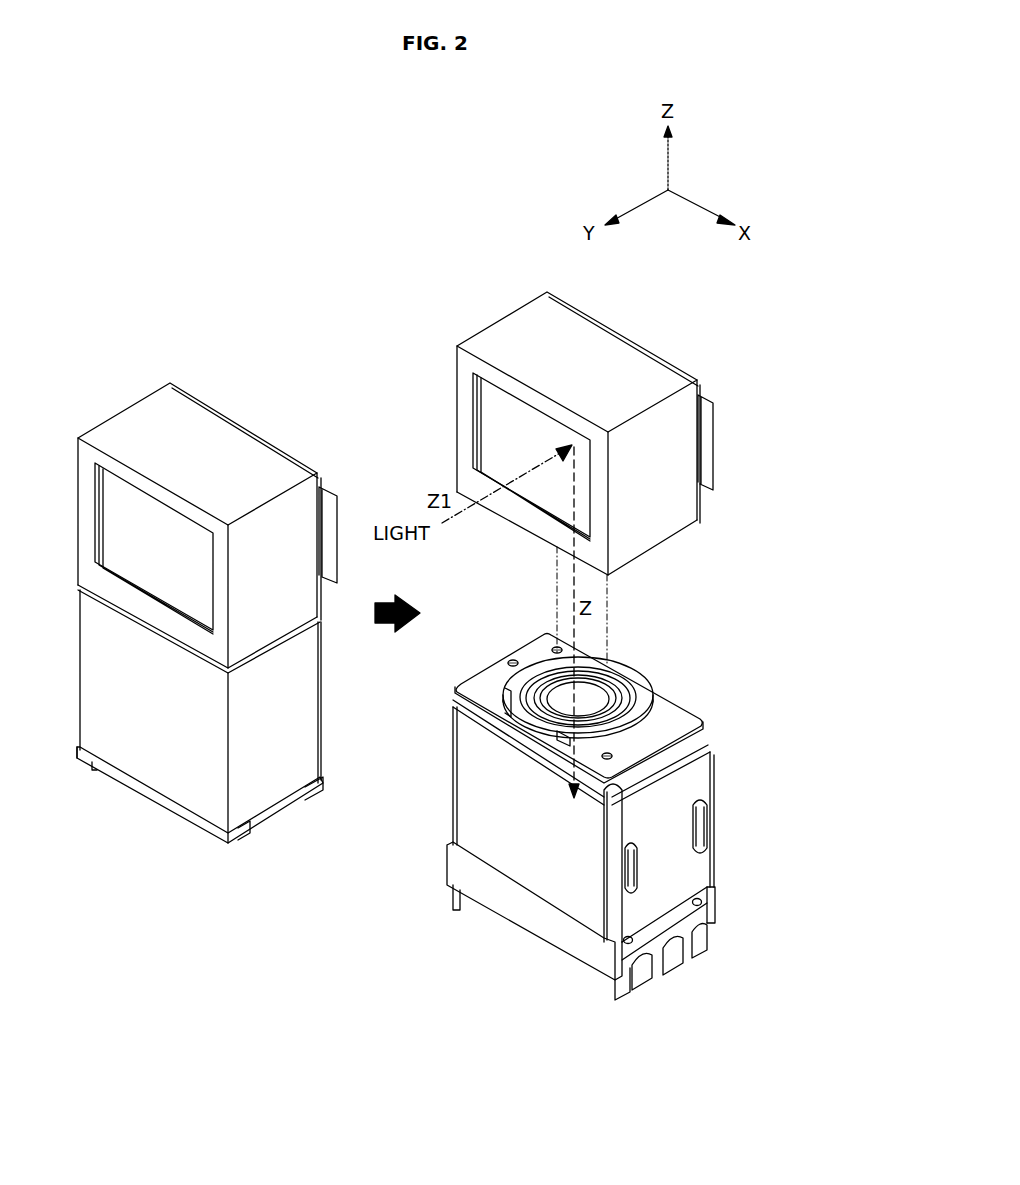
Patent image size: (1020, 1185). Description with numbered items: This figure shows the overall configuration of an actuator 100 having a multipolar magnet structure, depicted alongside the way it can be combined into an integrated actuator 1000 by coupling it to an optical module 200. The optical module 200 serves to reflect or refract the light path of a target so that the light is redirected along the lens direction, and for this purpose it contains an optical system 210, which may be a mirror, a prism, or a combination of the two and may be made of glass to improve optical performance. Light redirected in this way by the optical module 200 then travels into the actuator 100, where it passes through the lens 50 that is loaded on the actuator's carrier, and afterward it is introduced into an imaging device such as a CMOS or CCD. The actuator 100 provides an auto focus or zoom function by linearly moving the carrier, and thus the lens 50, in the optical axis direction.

The integrated actuator 1000 is at (140, 384).
The optical module 200 is at (462, 324).
The optical system 210 is at (497, 436).
The actuator 100 is at (727, 818).
The lens 50 is at (590, 702).